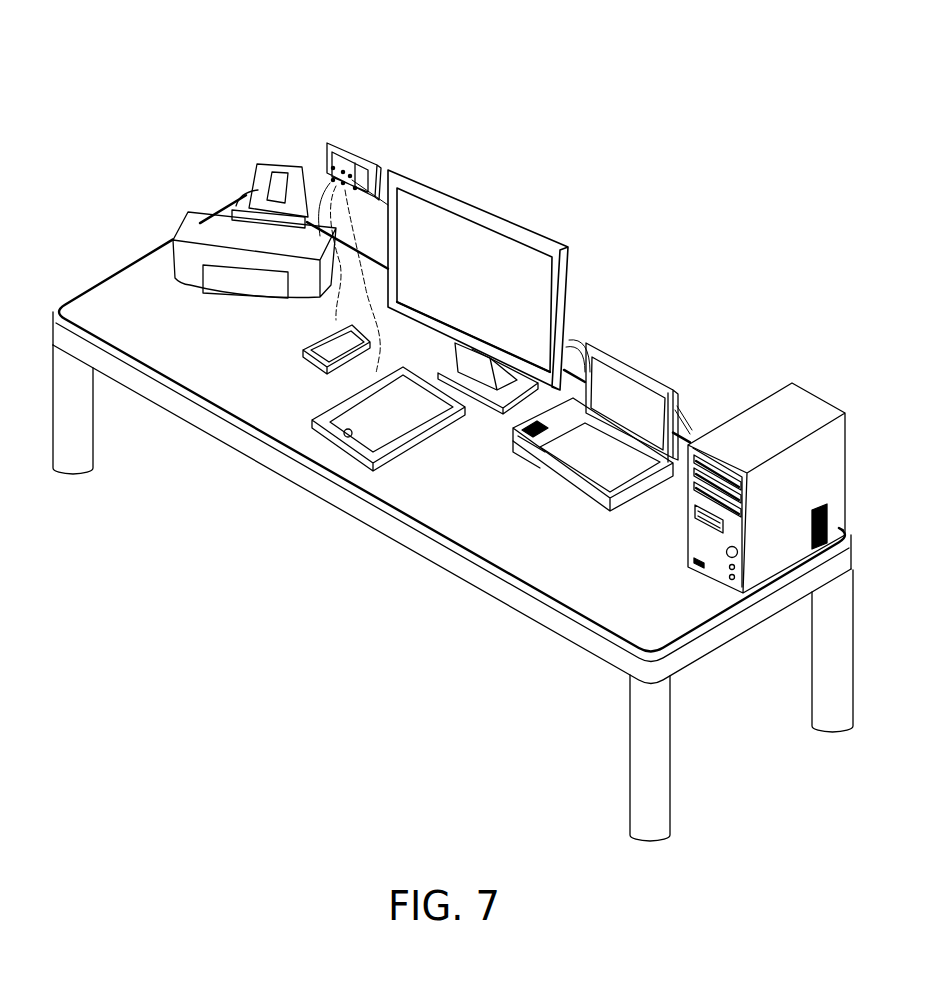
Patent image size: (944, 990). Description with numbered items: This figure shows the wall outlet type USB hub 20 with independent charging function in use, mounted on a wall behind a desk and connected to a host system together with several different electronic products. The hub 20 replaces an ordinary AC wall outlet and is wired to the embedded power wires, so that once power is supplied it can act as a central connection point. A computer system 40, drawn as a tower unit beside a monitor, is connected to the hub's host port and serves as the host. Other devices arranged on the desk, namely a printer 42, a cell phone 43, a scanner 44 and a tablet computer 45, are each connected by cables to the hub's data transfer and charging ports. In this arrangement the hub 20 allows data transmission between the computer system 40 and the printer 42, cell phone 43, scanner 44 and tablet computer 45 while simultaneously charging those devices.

The wall outlet type USB hub 20 is at (362, 157).
The computer system 40 is at (762, 427).
The printer 42 is at (193, 232).
The cell phone 43 is at (317, 362).
The scanner 44 is at (627, 383).
The tablet computer 45 is at (353, 453).